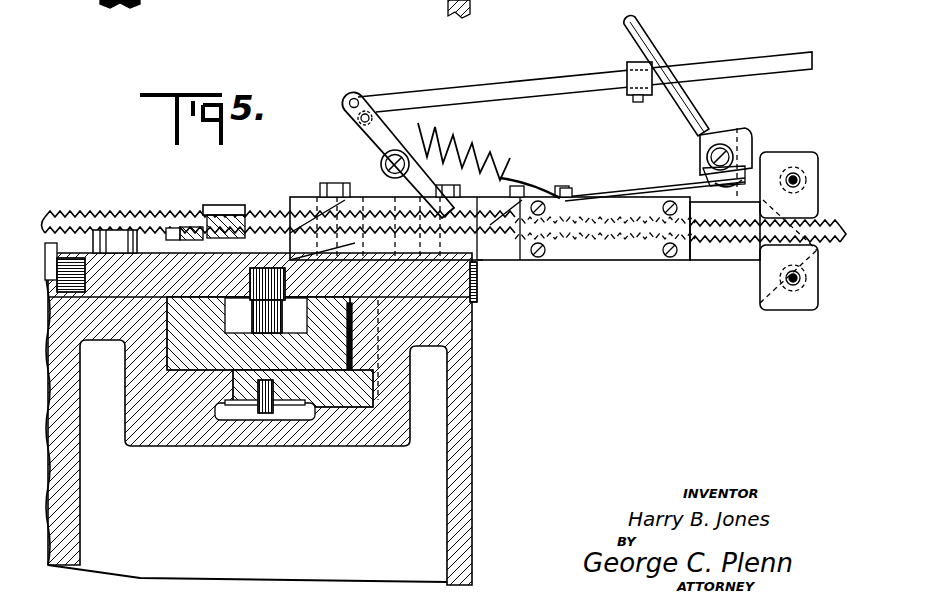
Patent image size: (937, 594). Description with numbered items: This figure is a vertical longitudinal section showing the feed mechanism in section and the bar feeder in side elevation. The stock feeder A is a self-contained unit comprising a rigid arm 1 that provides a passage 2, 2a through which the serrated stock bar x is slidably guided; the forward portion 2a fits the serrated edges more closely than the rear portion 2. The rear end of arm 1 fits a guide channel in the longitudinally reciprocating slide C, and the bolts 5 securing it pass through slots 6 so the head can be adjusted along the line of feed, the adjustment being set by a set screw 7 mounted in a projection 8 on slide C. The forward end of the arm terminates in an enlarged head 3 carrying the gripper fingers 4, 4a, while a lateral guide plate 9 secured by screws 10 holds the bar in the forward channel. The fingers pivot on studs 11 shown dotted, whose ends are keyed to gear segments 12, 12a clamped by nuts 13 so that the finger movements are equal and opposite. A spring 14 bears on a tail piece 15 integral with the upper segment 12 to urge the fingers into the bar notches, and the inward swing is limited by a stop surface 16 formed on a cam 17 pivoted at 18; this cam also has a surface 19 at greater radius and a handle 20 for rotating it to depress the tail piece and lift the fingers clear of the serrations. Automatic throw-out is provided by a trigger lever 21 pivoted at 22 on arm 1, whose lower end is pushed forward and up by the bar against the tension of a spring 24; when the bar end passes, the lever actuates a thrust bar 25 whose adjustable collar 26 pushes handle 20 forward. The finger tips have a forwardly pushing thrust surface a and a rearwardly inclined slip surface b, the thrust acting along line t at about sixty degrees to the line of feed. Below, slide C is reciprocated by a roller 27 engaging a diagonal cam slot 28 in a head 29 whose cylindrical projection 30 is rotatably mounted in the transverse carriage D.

The stock bar x is at (108, 214).
The rigid arm 1 is at (518, 181).
The rear portion of passage 2 is at (500, 260).
The forward portion of guide channel 2a is at (702, 262).
The enlarged head 3 is at (762, 310).
The gripper finger 4 is at (782, 200).
The gripper finger 4a is at (768, 285).
The bolt 5 is at (328, 183).
The slot 6 is at (300, 197).
The set screw 7 is at (176, 227).
The projection 8 is at (218, 205).
The lateral guide plate 9 is at (590, 260).
The screw 10 is at (540, 258).
The stud 11 is at (805, 170).
The gear segment 12 is at (784, 160).
The gear segment 12a is at (762, 262).
The nut 13 is at (757, 300).
The spring 14 is at (618, 196).
The tail piece 15 is at (712, 184).
The stop surface 16 is at (708, 162).
The cam 17 is at (733, 134).
The pivot 18 is at (710, 150).
The surface 19 is at (743, 128).
The handle 20 is at (643, 30).
The trigger lever 21 is at (380, 178).
The pivot 22 is at (382, 158).
The spring 24 is at (463, 152).
The thrust bar 25 is at (495, 83).
The adjustable collar 26 is at (627, 70).
The roller 27 is at (230, 398).
The cam slot 28 is at (185, 402).
The head 29 is at (325, 395).
The cylindrical projection 30 is at (257, 412).
The stock feeder A is at (606, 262).
The slide C is at (481, 297).
The transverse carriage D is at (350, 380).
The thrust line t is at (770, 150).
The thrust surface a is at (831, 231).
The slip surface b is at (830, 232).